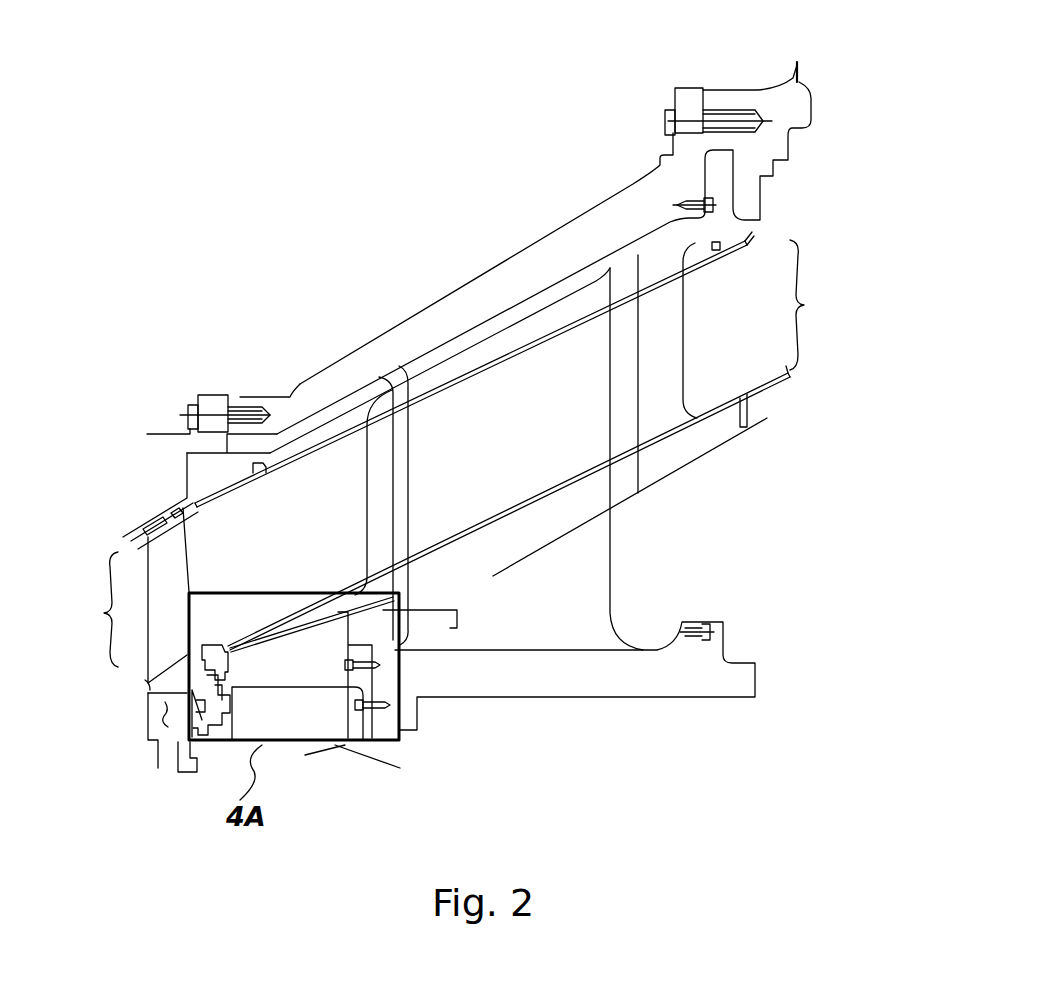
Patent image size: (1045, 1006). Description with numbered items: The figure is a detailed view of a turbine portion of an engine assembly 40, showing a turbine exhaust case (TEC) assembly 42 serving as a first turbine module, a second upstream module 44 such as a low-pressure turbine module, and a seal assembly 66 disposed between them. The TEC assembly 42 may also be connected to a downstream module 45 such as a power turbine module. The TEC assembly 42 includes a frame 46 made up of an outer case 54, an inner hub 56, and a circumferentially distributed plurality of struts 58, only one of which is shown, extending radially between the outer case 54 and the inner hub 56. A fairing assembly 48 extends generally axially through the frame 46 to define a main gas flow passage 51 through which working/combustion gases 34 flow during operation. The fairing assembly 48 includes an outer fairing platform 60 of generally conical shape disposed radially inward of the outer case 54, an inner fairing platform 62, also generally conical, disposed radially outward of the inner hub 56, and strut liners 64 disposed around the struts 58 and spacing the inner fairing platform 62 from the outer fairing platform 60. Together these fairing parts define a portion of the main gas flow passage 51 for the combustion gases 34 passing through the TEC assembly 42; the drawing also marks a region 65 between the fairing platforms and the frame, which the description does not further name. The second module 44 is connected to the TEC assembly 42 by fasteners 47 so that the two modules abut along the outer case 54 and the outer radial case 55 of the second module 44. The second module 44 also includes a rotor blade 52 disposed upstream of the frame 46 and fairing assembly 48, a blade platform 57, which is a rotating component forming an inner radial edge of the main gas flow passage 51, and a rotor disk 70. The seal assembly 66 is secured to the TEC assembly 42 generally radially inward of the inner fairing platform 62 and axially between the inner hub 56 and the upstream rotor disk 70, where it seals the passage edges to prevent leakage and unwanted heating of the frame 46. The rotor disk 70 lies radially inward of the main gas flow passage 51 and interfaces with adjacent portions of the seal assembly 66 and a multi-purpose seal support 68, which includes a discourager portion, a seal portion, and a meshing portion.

The working/combustion gases 34 is at (647, 370).
The engine assembly 40 is at (444, 130).
The turbine exhaust case (TEC) assembly 42 is at (428, 232).
The second module 44 is at (109, 494).
The downstream module 45 is at (774, 110).
The frame 46 is at (396, 322).
The fasteners 47 is at (662, 120).
The fairing assembly 48 is at (690, 262).
The main gas flow passage 51 is at (459, 453).
The rotor blade 52 is at (180, 606).
The outer case 54 is at (295, 390).
The outer radial case 55 is at (212, 398).
The inner hub 56 is at (555, 690).
The blade platform 57 is at (143, 683).
The struts 58 is at (612, 593).
The outer fairing platform 60 is at (240, 494).
The inner fairing platform 62 is at (265, 623).
The strut liners 64 is at (365, 517).
The cavity 65 is at (402, 538).
The seal assembly 66 is at (245, 708).
The multi-purpose seal support 68 is at (318, 725).
The rotor disk 70 is at (160, 700).